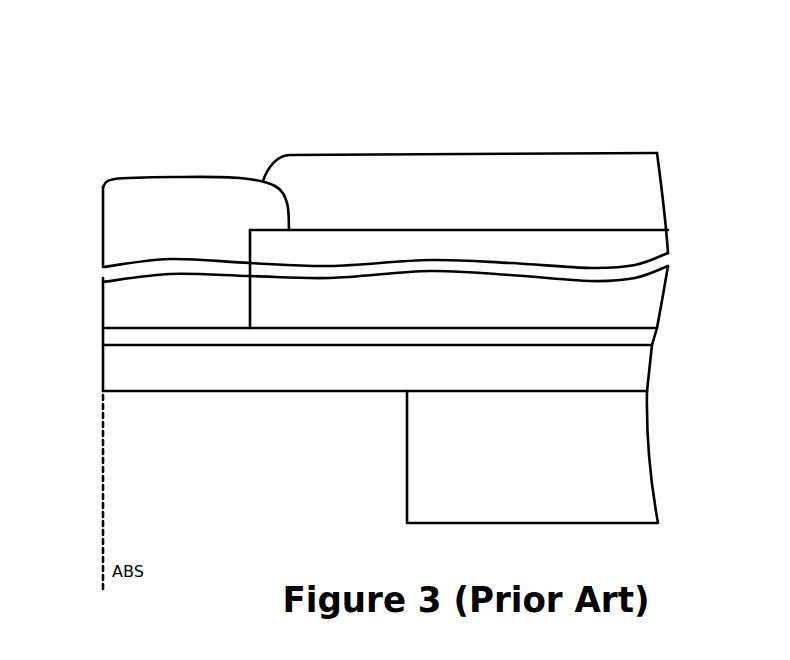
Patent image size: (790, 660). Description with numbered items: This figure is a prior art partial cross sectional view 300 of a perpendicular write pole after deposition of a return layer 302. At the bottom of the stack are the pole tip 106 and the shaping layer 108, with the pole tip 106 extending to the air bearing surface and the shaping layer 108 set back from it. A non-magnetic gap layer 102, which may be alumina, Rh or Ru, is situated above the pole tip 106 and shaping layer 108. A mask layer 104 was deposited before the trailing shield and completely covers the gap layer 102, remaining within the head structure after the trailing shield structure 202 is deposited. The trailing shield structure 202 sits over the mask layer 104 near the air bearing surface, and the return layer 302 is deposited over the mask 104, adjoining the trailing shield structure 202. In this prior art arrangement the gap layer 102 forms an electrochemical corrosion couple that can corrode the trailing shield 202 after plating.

The partial cross sectional view 300 is at (587, 110).
The return layer 302 is at (512, 153).
The trailing shield structure 202 is at (205, 176).
The mask layer 104 is at (365, 230).
The non-magnetic gap layer 102 is at (113, 328).
The pole tip 106 is at (280, 392).
The shaping layer 108 is at (405, 482).